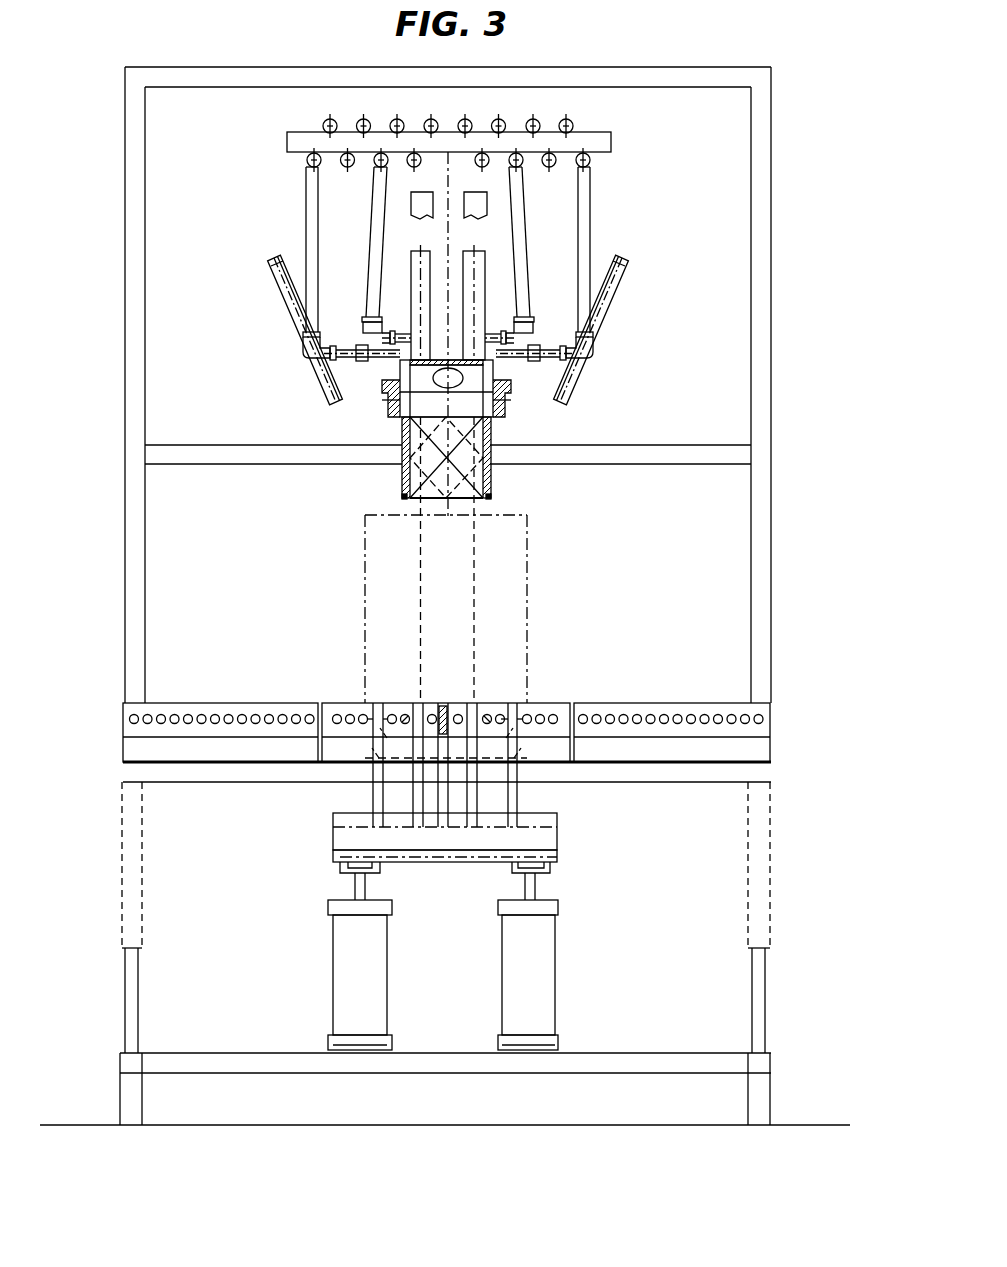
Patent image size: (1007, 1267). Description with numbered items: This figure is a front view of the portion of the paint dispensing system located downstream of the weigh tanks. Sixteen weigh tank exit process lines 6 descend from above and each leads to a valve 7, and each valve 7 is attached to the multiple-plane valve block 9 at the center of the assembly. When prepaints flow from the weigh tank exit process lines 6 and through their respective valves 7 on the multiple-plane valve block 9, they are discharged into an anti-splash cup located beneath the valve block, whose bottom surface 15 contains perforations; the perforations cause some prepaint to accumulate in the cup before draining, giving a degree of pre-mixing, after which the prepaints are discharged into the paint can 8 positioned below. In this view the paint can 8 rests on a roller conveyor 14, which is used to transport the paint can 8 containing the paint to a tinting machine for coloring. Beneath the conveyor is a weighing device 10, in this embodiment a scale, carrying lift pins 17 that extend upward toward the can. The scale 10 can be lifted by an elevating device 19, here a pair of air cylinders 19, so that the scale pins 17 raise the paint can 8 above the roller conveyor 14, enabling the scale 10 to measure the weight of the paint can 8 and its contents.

The weigh tank exit process lines 6 is at (306, 200).
The valve 7 is at (270, 268).
The multiple-plane valve block 9 is at (512, 402).
The bottom surface 15 is at (480, 503).
The paint can 8 is at (540, 616).
The roller conveyor 14 is at (188, 713).
The lift pins 17 is at (443, 798).
The weighing device 10 is at (557, 831).
The elevating device 19 is at (557, 973).